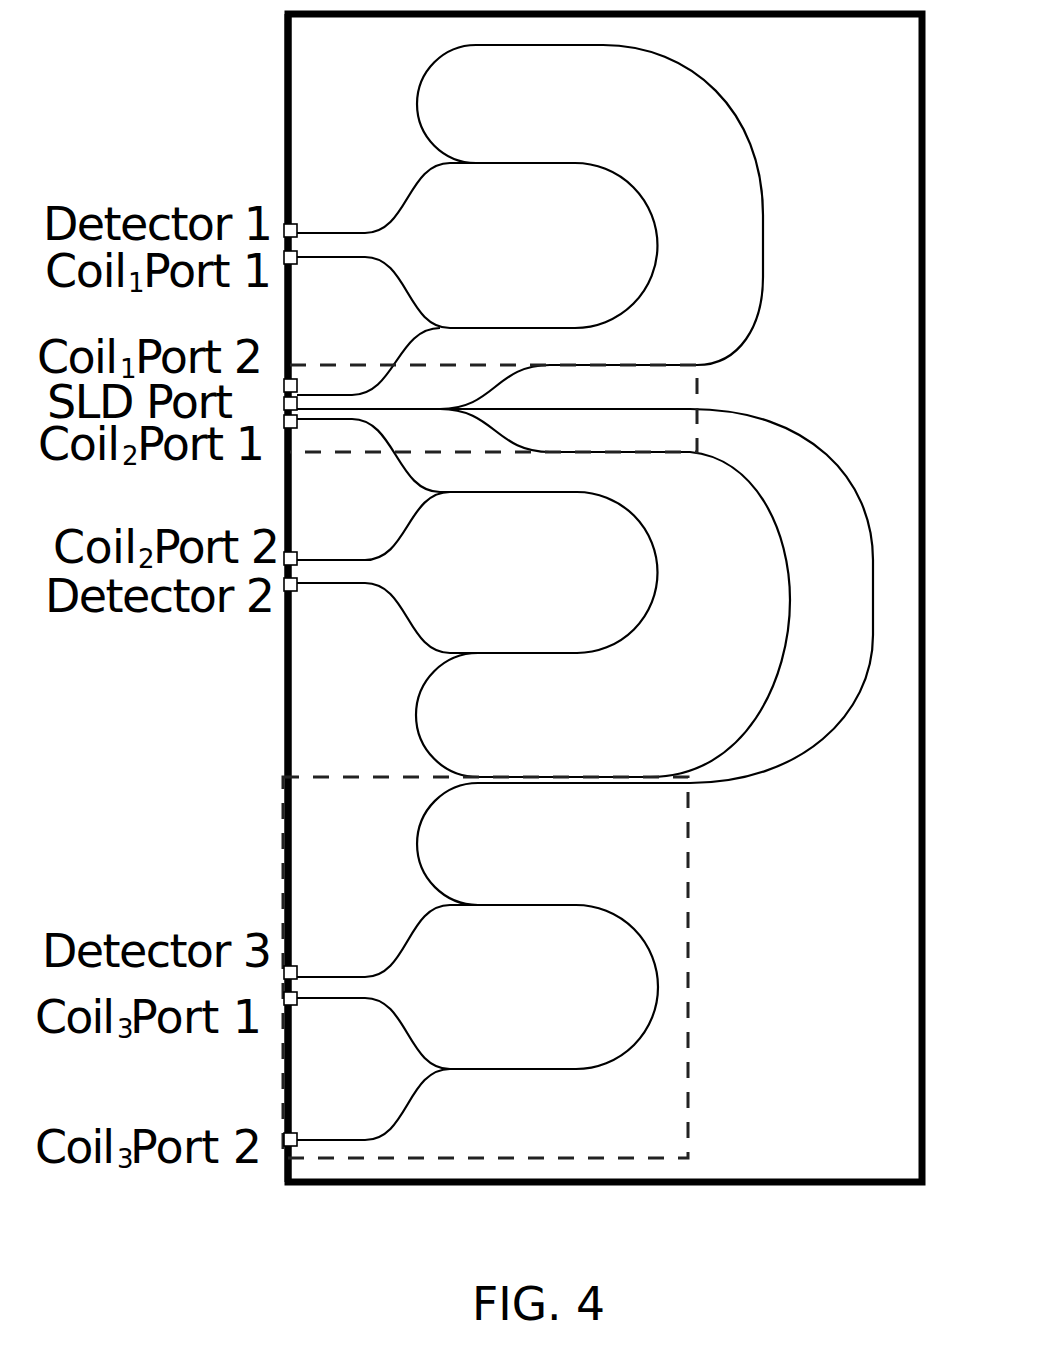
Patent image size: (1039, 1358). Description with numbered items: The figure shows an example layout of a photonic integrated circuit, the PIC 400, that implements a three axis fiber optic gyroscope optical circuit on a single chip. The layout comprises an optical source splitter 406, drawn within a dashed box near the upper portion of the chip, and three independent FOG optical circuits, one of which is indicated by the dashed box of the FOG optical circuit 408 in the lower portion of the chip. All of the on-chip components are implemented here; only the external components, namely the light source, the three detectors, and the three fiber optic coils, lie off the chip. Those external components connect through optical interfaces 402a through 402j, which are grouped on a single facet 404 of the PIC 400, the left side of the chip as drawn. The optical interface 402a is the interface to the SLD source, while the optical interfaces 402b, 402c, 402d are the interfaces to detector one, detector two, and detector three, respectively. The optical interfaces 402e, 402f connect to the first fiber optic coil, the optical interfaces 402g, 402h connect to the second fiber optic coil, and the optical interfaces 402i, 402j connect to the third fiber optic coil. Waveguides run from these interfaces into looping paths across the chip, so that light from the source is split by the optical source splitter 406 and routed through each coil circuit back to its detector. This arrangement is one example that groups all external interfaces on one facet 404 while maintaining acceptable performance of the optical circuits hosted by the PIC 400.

The PIC 400 is at (822, 1153).
The optical interface to the SLD 402a is at (292, 408).
The optical interface to detector 1 402b is at (293, 230).
The optical interface to detector 2 402c is at (293, 587).
The optical interface to detector 3 402d is at (292, 975).
The optical interface to the first fiber optic coil 402e is at (295, 260).
The optical interface to the first fiber optic coil 402f is at (290, 387).
The optical interface to the second fiber optic coil 402g is at (290, 430).
The optical interface to the second fiber optic coil 402h is at (292, 560).
The optical interface to the third fiber optic coil 402i is at (295, 1000).
The optical interface to the third fiber optic coil 402j is at (292, 1140).
The facet 404 is at (285, 145).
The optical source splitter 406 is at (700, 388).
The FOG optical circuit 408 is at (690, 1067).